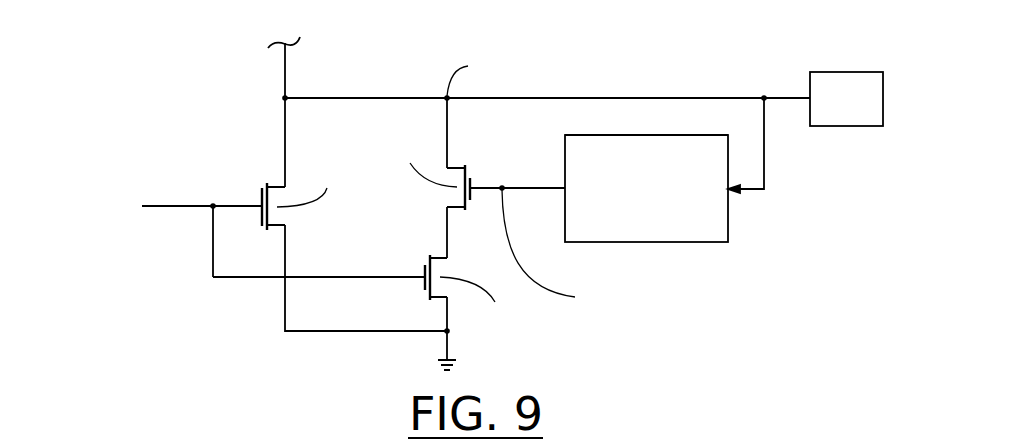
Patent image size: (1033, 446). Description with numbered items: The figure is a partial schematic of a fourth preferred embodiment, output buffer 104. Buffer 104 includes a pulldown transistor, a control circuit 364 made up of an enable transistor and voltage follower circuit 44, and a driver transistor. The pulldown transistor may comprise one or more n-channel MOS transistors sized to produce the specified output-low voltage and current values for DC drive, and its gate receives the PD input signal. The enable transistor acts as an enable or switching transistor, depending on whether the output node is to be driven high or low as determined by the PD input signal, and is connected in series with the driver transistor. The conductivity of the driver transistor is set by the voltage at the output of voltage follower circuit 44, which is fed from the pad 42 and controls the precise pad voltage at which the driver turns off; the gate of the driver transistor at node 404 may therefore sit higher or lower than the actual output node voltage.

The output buffer 104 is at (250, 33).
The control node 404 is at (457, 172).
The control circuit 364 is at (723, 251).
The voltage follower circuit 44 is at (692, 135).
The pad 42 is at (855, 72).